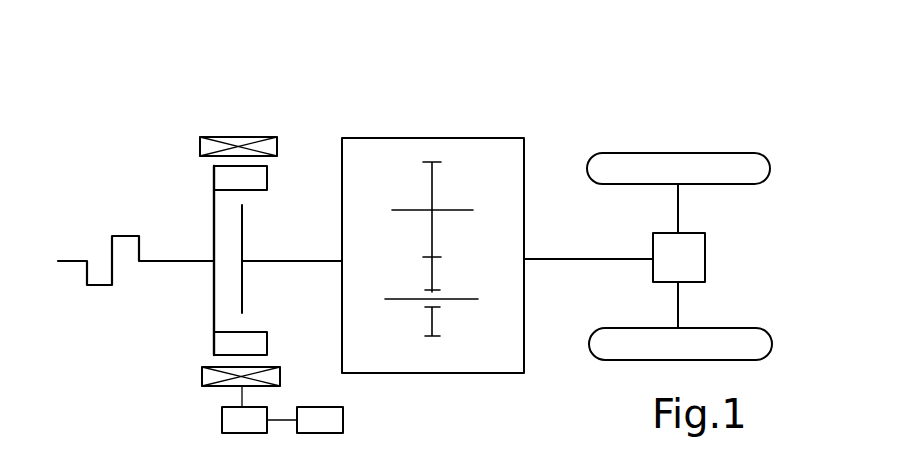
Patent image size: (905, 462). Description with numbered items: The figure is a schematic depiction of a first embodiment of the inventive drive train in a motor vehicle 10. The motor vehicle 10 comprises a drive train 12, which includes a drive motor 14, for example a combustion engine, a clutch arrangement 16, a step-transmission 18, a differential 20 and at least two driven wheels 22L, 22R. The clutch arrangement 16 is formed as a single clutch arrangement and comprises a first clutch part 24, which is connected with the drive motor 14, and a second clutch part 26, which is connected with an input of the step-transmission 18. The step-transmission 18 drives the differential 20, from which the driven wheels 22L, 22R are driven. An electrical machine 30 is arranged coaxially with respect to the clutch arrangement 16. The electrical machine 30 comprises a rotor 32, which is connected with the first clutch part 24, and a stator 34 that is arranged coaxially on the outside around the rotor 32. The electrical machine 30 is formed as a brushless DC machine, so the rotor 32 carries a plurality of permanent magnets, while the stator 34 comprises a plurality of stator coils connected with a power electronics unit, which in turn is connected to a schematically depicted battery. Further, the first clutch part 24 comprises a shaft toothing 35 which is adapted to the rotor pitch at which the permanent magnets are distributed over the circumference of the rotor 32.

The motor vehicle 10 is at (730, 112).
The drive train 12 is at (587, 112).
The drive motor 14 is at (125, 236).
The clutch arrangement 16 is at (195, 295).
The step-transmission 18 is at (458, 138).
The differential 20 is at (707, 257).
The driven wheel 22R is at (772, 170).
The driven wheel 22L is at (775, 352).
The first clutch part 24 is at (213, 212).
The second clutch part 26 is at (245, 237).
The electrical machine 30 is at (271, 228).
The rotor 32 is at (225, 178).
The stator 34 is at (238, 147).
The shaft toothing 35 is at (257, 331).